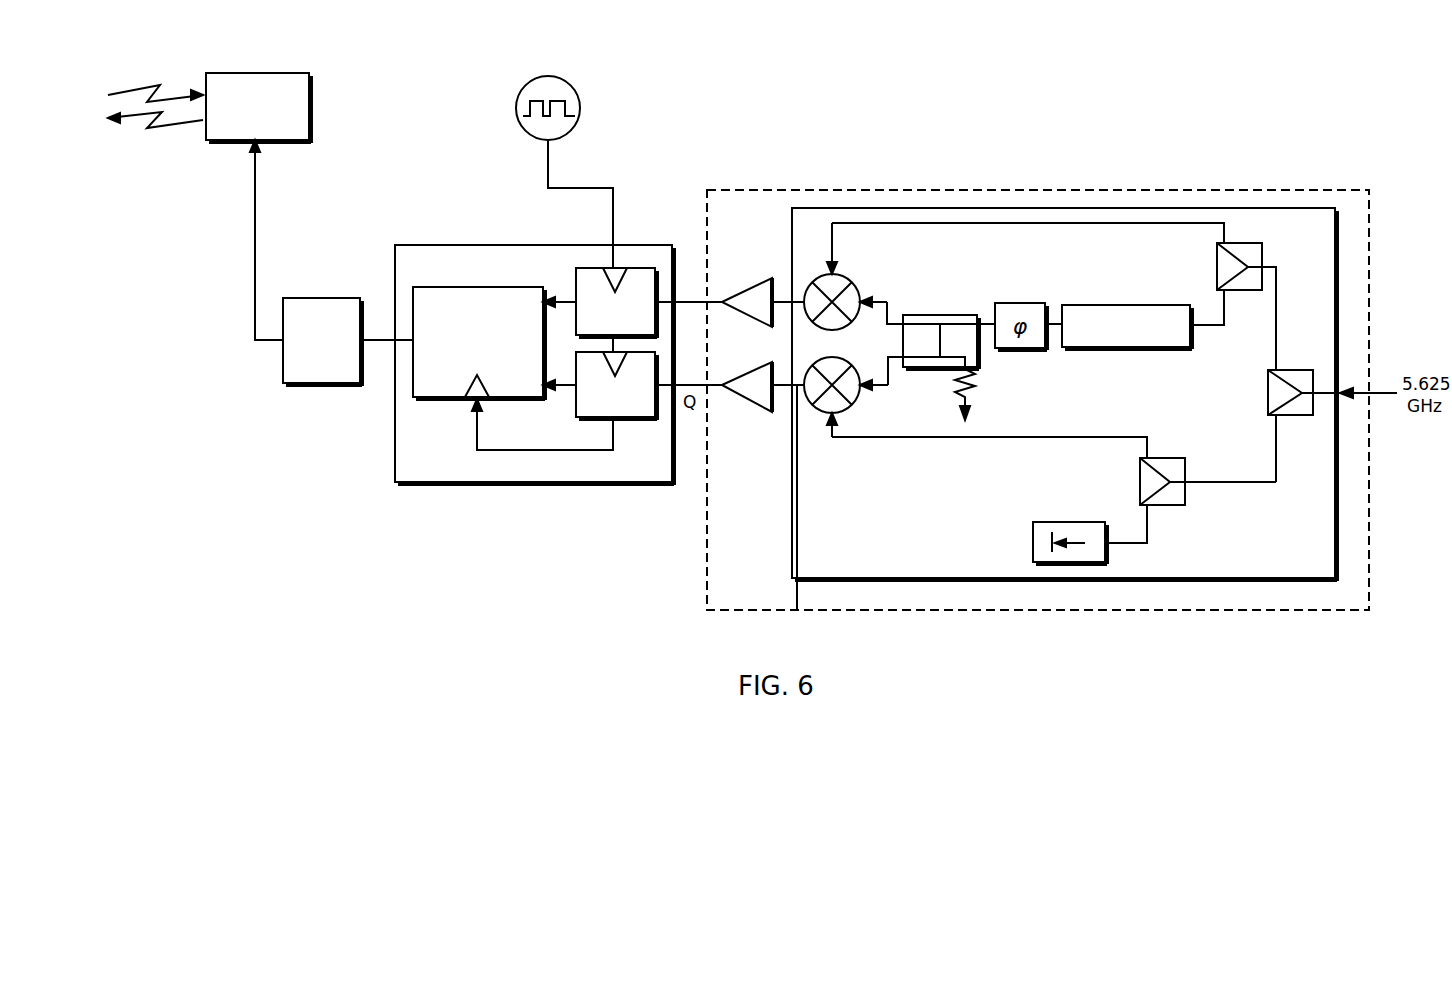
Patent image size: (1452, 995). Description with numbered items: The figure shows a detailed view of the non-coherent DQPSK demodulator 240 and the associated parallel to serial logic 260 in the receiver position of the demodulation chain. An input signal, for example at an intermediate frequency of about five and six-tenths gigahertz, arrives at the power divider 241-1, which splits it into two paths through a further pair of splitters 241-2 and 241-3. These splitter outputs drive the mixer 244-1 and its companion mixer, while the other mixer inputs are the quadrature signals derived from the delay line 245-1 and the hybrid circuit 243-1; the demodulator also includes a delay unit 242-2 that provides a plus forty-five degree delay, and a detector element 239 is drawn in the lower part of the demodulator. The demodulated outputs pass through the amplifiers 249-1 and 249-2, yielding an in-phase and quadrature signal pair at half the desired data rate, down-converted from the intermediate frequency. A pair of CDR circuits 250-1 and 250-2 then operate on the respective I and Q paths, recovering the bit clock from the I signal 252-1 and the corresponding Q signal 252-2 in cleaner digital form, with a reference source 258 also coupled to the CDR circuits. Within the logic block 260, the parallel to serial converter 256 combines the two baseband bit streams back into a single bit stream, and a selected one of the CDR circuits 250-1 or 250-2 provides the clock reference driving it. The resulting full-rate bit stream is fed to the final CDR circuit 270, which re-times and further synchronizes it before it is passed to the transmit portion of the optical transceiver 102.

The optical transceiver 102 is at (238, 73).
The reference clock source 258 is at (546, 76).
The final CDR circuit 270 is at (340, 384).
The parallel to serial logic 260 is at (490, 484).
The parallel to serial converter 256 is at (479, 343).
The CDR circuit 250-1 is at (598, 268).
The CDR circuit 250-2 is at (638, 418).
The I signal 252-1 is at (567, 298).
The recovered data line (Q) 252-2 is at (572, 386).
The DQPSK demodulator 240 is at (968, 190).
The amplifier 249-1 is at (772, 278).
The amplifier 249-2 is at (774, 412).
The mixer 244-1 is at (848, 280).
The delay unit 242-2 is at (850, 405).
The hybrid circuit 243-1 is at (928, 315).
The delay line 245-1 is at (1075, 305).
The splitter 241-2 is at (1217, 252).
The power divider 241-1 is at (1268, 376).
The splitter 241-3 is at (1178, 505).
The detector diode 239 is at (1057, 522).